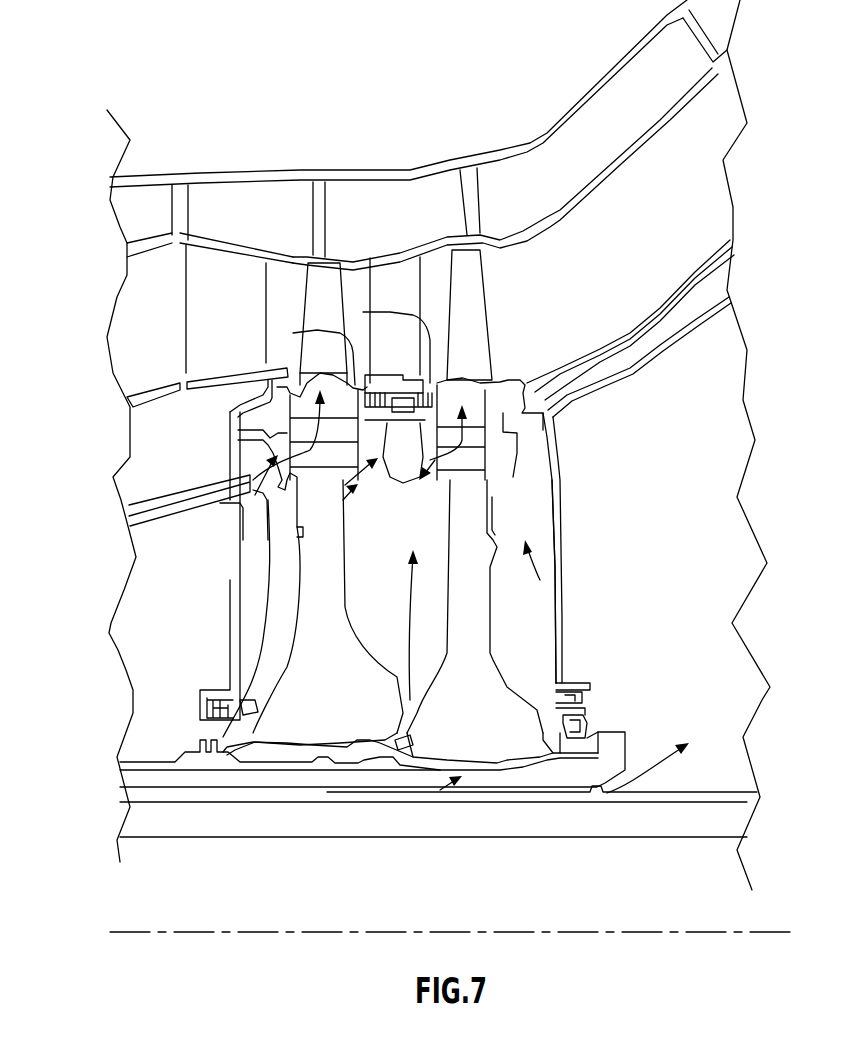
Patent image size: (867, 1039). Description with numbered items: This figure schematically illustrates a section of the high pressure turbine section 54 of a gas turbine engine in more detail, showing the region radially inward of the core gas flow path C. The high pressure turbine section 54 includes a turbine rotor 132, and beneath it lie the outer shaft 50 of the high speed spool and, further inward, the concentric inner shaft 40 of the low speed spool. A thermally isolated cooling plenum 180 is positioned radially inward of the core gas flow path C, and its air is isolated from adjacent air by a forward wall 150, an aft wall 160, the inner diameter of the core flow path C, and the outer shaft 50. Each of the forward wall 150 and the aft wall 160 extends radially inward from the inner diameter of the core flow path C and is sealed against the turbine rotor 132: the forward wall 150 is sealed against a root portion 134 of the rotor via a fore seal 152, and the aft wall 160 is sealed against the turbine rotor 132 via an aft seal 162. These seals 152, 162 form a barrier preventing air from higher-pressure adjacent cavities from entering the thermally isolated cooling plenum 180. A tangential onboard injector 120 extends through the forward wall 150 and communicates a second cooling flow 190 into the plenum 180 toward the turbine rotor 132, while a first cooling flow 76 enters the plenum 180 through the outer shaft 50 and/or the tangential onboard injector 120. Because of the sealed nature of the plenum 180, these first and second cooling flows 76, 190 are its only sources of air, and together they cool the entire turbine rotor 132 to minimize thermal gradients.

The high pressure turbine section 54 is at (476, 90).
The core gas flow path C is at (155, 320).
The tangential onboard injector 120 is at (180, 542).
The forward wall 150 is at (232, 575).
The seal 152 is at (200, 707).
The turbine rotor 132 is at (354, 693).
The root portion 134 is at (255, 700).
The aft wall 160 is at (563, 535).
The seal 162 is at (587, 698).
The thermally isolated cooling plenum 180 is at (527, 497).
The second cooling flow 190 is at (418, 537).
The outer shaft 50 is at (137, 773).
The first cooling flow 76 is at (386, 796).
The inner shaft 40 is at (175, 820).